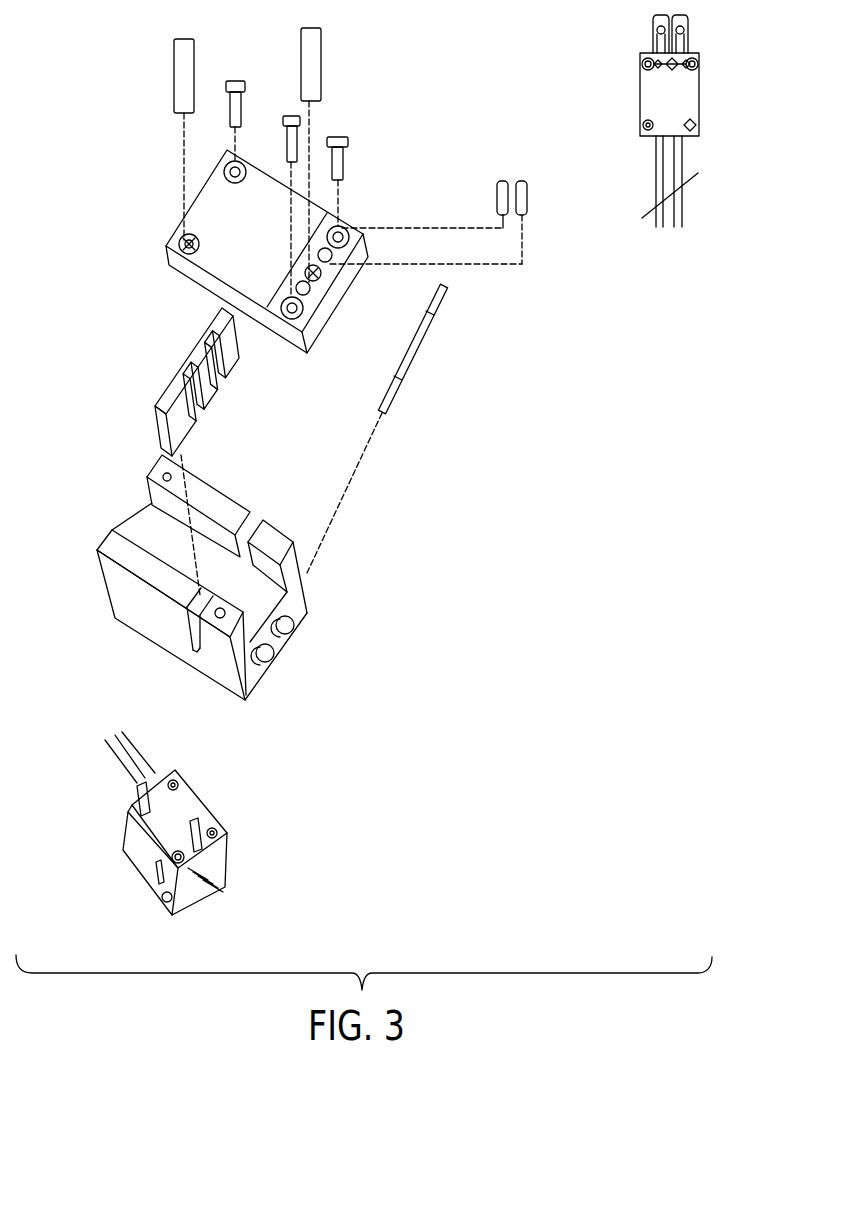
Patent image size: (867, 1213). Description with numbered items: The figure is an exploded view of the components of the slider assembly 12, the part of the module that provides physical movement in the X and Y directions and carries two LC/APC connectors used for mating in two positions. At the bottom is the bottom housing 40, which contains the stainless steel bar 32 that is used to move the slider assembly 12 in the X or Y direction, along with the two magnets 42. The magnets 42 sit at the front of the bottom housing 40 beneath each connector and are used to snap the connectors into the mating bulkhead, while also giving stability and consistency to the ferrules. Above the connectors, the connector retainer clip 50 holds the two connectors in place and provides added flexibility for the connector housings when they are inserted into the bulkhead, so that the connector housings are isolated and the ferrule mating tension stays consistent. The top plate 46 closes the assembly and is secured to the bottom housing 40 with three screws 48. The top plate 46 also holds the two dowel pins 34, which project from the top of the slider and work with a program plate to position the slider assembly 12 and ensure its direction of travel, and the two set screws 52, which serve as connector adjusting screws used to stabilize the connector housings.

The slider assembly 12 is at (474, 471).
The stainless steel bar 32 is at (407, 372).
The dowel pins 34 is at (194, 51).
The bottom housing 40 is at (250, 694).
The magnets 42 is at (294, 625).
The top plate 46 is at (320, 337).
The screws 48 is at (244, 108).
The connector retainer clip 50 is at (193, 427).
The set screws 52 is at (527, 202).